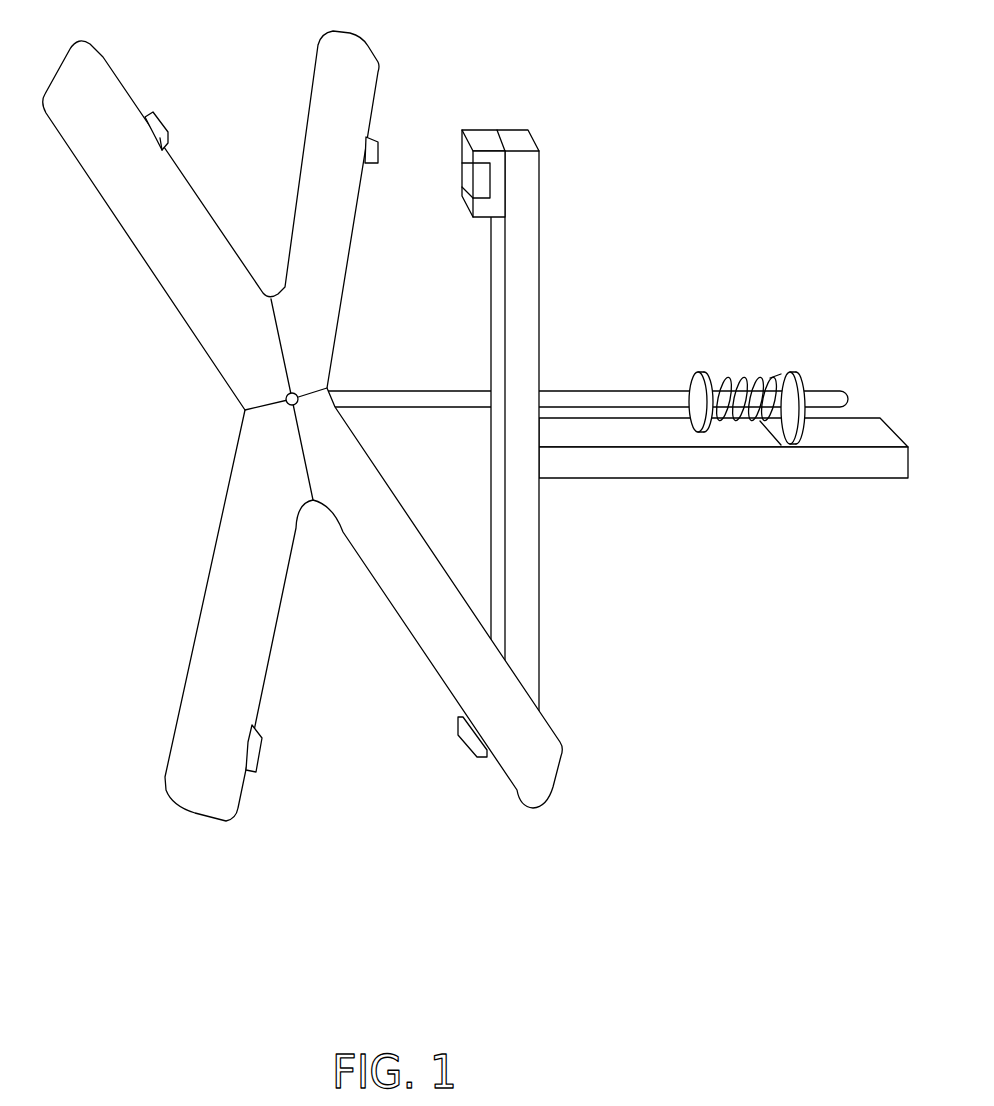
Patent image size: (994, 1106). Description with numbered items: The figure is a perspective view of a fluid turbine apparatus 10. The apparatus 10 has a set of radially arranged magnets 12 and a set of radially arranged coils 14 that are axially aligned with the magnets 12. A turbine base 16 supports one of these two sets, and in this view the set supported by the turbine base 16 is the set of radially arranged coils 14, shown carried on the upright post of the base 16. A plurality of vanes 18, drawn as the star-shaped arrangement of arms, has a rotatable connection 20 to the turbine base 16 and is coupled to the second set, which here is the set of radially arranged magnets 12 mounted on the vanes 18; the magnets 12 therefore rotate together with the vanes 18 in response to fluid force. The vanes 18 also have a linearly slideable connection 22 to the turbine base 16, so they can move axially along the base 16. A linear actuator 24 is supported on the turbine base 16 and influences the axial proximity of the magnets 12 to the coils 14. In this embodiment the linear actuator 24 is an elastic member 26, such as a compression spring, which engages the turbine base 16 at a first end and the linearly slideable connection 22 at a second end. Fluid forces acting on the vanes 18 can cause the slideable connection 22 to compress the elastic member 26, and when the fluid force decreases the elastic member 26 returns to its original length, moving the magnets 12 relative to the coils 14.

The fluid turbine apparatus 10 is at (475, 434).
The set of radially arranged magnets 12 is at (372, 140).
The set of radially arranged coils 14 is at (487, 142).
The turbine base 16 is at (818, 462).
The plurality of vanes 18 is at (108, 104).
The rotatable connection 20 is at (460, 388).
The linearly slideable connection 22 is at (819, 381).
The linear actuator 24 is at (738, 358).
The elastic member 26 is at (743, 390).